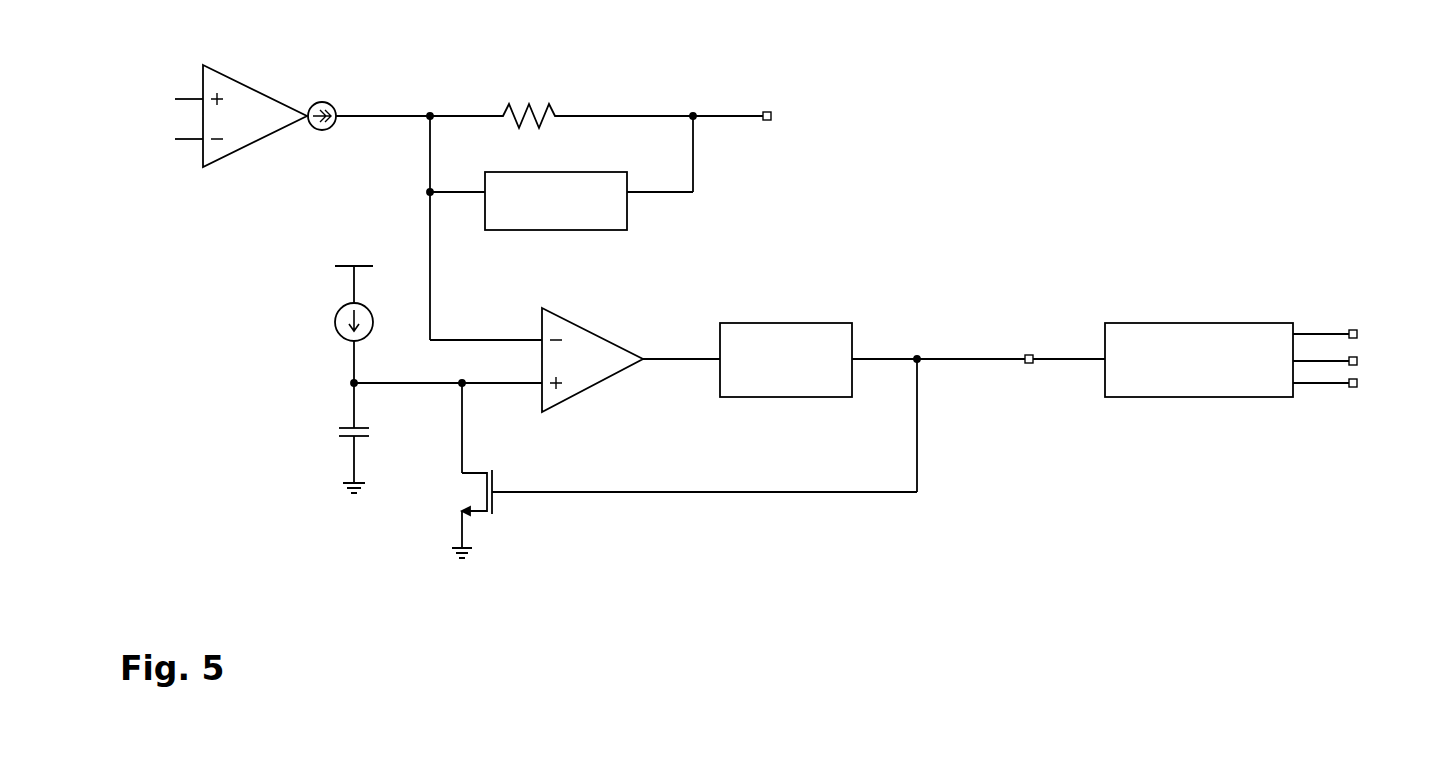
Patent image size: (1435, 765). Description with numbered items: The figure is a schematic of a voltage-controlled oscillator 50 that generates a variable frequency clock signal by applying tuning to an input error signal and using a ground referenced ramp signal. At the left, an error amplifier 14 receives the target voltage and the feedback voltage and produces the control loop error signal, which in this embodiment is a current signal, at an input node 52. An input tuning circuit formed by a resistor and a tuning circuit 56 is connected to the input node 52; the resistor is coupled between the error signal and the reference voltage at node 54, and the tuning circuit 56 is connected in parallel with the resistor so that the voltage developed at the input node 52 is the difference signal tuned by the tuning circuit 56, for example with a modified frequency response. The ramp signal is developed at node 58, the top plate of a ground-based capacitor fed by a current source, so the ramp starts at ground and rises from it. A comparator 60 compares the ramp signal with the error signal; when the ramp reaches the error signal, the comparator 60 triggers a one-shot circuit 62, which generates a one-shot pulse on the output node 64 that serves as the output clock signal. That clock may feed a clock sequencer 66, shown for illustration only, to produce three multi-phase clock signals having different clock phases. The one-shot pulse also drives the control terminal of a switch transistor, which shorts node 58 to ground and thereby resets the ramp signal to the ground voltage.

The error amplifier 14 is at (250, 147).
The voltage-controlled oscillator 50 is at (1150, 70).
The input node 52 is at (430, 113).
The reference voltage node 54 is at (721, 114).
The tuning circuit 56 is at (598, 230).
The ramp signal node 58 is at (390, 381).
The comparator 60 is at (570, 400).
The one-shot circuit 62 is at (748, 397).
The output node 64 is at (950, 362).
The clock sequencer 66 is at (1160, 397).